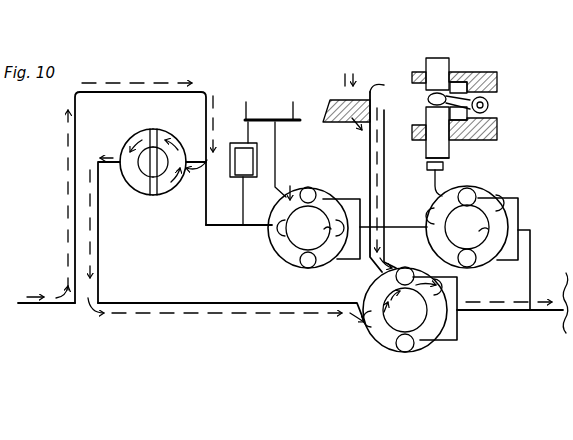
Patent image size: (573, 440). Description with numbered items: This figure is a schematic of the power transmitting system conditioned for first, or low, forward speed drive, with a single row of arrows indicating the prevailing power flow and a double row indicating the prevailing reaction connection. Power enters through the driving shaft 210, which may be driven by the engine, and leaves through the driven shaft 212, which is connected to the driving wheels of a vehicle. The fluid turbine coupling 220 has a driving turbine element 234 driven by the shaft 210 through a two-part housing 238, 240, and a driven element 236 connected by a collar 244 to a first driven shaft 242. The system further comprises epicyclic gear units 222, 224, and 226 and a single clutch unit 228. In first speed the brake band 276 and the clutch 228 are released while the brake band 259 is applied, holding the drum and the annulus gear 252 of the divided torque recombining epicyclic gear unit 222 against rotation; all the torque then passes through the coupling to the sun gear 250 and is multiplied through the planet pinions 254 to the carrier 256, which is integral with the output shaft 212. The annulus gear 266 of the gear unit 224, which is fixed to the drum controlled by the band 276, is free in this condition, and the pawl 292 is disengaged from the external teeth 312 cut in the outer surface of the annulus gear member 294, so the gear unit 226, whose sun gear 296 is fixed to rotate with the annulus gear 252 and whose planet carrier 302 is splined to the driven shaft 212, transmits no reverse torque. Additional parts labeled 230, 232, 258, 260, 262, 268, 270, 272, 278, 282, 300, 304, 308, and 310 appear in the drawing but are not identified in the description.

The driving shaft 210 is at (58, 305).
The driven shaft 212 is at (540, 314).
The fluid turbine coupling 220 is at (151, 171).
The epicyclic gear unit 222 is at (393, 314).
The epicyclic gear unit 224 is at (335, 224).
The epicyclic gear unit 226 is at (477, 242).
The clutch unit 228 is at (257, 141).
The second inlet 230 is at (317, 111).
The third inlet 232 is at (258, 111).
The driving turbine element 234 is at (158, 136).
The driven turbine element 236 is at (141, 137).
The housing part 238 is at (75, 129).
The housing part 240 is at (200, 93).
The first driven shaft 242 is at (134, 303).
The collar 244 is at (98, 268).
The sun gear 250 is at (405, 310).
The annulus gear 252 is at (381, 340).
The planet pinions 254 is at (401, 270).
The carrier 256 is at (450, 340).
The inlet port 258 is at (333, 122).
The brake band 259 is at (370, 92).
The rotor 260 is at (280, 192).
The conduit 262 is at (213, 227).
The annulus gear 266 is at (283, 255).
The rollers 268 is at (314, 188).
The housing 270 is at (347, 262).
The conduit 272 is at (278, 128).
The brake band 276 is at (290, 104).
The conduit 278 is at (243, 186).
The valve body 282 is at (230, 165).
The pawl 292 is at (440, 66).
The annulus gear member 294 is at (431, 214).
The sun gear 296 is at (467, 227).
The ring 300 is at (460, 205).
The planet carrier 302 is at (520, 216).
The piston 304 is at (430, 102).
The valve housing 308 is at (497, 123).
The plunger end 310 is at (449, 155).
The external teeth 312 is at (443, 166).